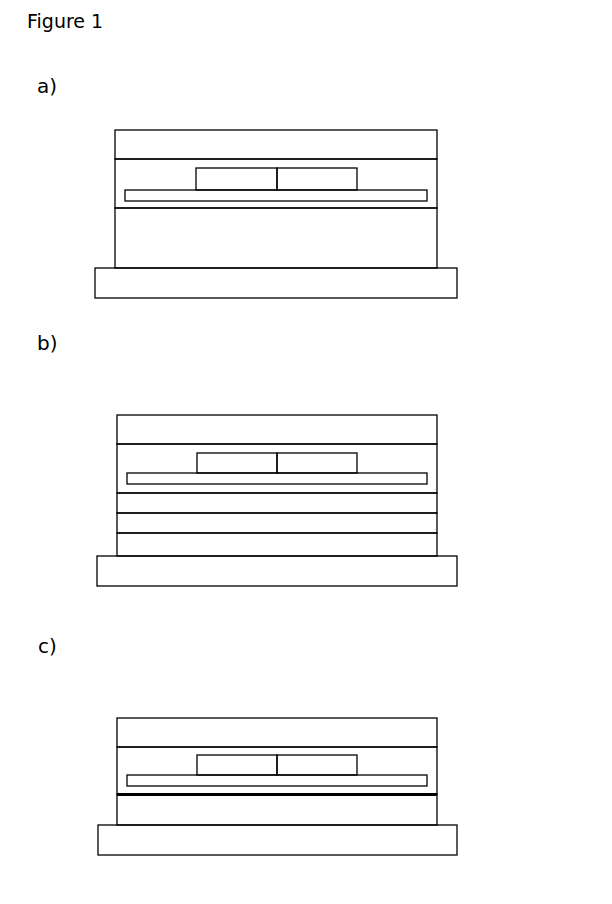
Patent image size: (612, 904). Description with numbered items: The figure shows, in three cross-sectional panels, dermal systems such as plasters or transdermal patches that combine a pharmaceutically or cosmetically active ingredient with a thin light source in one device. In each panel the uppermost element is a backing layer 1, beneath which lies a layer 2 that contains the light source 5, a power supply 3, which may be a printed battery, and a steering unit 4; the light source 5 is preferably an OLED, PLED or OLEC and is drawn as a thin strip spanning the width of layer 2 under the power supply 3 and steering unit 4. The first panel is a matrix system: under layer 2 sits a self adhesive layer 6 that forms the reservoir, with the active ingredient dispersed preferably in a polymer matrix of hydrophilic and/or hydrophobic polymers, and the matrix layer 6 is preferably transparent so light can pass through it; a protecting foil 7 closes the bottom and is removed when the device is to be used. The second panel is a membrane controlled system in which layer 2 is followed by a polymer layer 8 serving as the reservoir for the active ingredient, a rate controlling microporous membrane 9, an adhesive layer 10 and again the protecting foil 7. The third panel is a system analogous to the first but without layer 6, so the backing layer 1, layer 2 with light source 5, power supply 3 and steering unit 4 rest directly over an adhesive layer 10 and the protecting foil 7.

The backing layer 1 is at (165, 140).
The layer comprising the light source and power supply 2 is at (125, 180).
The power supply 3 is at (237, 178).
The steering unit 4 is at (307, 178).
The light source 5 is at (415, 195).
The self adhesive layer 6 is at (427, 238).
The protecting foil 7 is at (427, 287).
The polymer layer 8 is at (137, 503).
The rate controlling microporous membrane 9 is at (413, 523).
The adhesive layer 10 is at (137, 543).